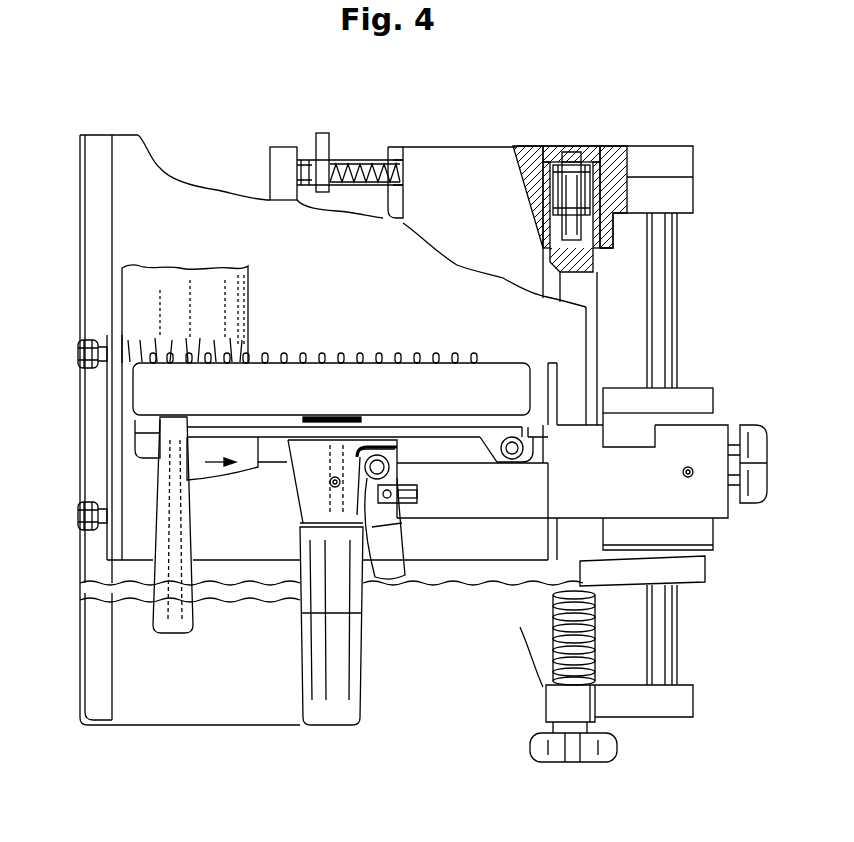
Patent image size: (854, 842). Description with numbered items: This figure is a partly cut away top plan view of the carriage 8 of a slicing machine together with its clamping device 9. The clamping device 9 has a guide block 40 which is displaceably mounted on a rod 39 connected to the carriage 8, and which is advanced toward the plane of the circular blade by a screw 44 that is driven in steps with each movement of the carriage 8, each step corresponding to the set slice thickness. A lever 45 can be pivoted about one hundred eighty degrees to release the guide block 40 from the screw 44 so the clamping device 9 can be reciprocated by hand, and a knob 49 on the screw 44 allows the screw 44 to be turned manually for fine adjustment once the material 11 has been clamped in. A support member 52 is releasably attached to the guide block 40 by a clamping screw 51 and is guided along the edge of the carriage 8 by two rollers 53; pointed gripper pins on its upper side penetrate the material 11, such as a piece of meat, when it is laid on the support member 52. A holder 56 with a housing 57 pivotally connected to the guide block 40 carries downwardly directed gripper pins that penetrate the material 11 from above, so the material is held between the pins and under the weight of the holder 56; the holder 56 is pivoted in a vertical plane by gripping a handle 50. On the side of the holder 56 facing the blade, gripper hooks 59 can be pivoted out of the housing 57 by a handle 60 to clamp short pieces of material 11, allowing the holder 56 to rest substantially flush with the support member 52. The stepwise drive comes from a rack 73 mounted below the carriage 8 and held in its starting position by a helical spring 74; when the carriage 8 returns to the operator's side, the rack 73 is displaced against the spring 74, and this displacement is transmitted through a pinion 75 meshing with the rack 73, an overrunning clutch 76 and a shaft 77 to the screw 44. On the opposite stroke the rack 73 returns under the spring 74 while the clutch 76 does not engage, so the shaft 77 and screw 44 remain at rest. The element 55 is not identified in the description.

The carriage 8 is at (127, 152).
The helical spring 74 is at (331, 161).
The rack 73 is at (359, 166).
The pinion 75 is at (588, 148).
The overrunning clutch 76 is at (594, 206).
The shaft 77 is at (578, 290).
The rod 39 is at (672, 306).
The rollers 53 is at (87, 343).
The material 11 is at (243, 321).
The gripper hooks 59 is at (307, 353).
The holder 56 is at (384, 380).
The housing 57 is at (491, 372).
The clamping device 9 is at (279, 478).
The handle 60 is at (186, 621).
The handle 50 is at (353, 683).
The arm 55 is at (476, 512).
The guide block 40 is at (704, 421).
The clamping screw 51 is at (762, 498).
The support member 52 is at (541, 560).
The lever 45 is at (701, 573).
The screw 44 is at (597, 640).
The knob 49 is at (598, 752).